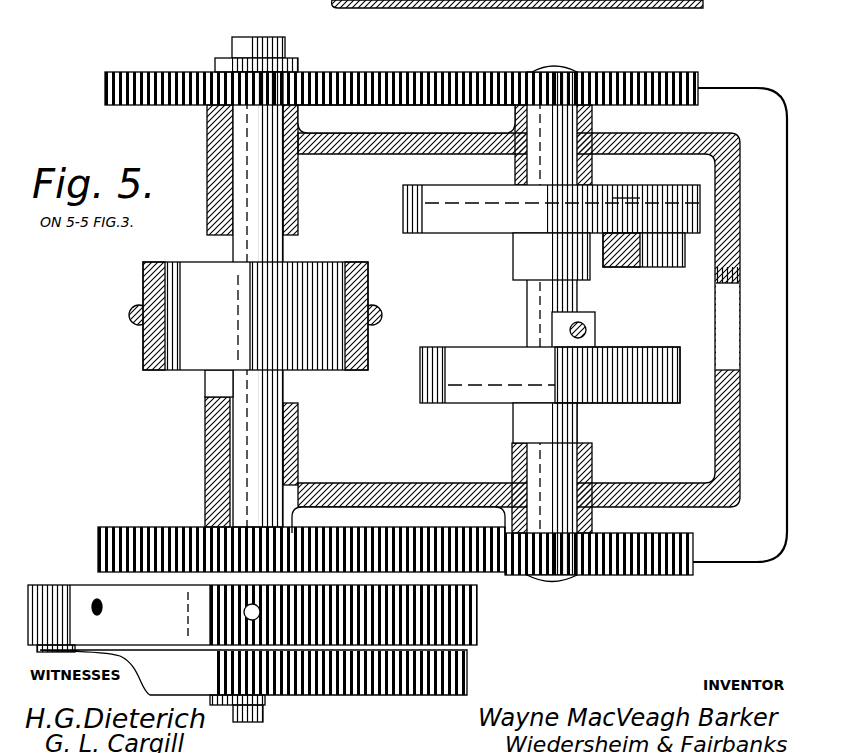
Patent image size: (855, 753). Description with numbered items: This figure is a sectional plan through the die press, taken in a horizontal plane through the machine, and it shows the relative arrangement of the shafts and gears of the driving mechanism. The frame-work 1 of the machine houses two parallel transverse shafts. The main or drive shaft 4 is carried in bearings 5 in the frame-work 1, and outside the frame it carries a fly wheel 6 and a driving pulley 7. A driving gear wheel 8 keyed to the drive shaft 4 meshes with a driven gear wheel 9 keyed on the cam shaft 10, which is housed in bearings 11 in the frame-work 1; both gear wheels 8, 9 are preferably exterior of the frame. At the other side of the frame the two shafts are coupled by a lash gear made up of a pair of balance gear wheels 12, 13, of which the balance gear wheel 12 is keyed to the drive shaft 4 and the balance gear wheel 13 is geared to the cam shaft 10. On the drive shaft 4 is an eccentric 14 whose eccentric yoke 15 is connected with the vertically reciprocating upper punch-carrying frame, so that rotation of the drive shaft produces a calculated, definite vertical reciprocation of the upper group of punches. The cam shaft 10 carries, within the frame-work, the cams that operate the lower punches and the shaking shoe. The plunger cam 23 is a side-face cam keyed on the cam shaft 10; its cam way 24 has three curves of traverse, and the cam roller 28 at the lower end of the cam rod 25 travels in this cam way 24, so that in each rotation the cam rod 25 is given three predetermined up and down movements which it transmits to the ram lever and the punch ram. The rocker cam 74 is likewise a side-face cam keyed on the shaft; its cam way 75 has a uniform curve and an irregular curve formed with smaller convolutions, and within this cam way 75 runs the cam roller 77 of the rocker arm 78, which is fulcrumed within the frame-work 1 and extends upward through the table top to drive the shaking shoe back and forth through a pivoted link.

The frame-work 1 is at (698, 139).
The main or drive shaft 4 is at (251, 48).
The bearings 5 is at (299, 203).
The fly wheel 6 is at (252, 618).
The driving pulley 7 is at (253, 686).
The driving gear wheel 8 is at (98, 550).
The driven gear wheel 9 is at (512, 575).
The cam shaft 10 is at (557, 68).
The bearings 11 is at (515, 172).
The balance gear wheel 12 is at (105, 93).
The balance gear wheel 13 is at (611, 90).
The eccentric 14 is at (255, 316).
The eccentric yoke 15 is at (143, 292).
The plunger cam 23 is at (420, 377).
The cam way 24 is at (503, 375).
The cam rod 25 is at (597, 330).
The cam roller 28 is at (590, 363).
The rocker cam 74 is at (403, 213).
The cam way 75 is at (480, 206).
The cam roller 77 is at (642, 222).
The rocker arm 78 is at (632, 258).